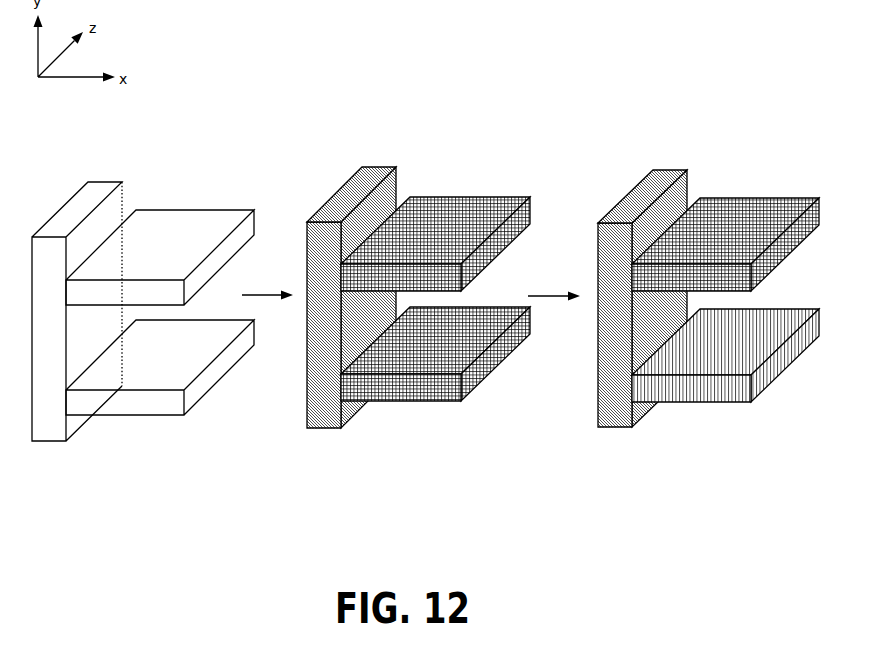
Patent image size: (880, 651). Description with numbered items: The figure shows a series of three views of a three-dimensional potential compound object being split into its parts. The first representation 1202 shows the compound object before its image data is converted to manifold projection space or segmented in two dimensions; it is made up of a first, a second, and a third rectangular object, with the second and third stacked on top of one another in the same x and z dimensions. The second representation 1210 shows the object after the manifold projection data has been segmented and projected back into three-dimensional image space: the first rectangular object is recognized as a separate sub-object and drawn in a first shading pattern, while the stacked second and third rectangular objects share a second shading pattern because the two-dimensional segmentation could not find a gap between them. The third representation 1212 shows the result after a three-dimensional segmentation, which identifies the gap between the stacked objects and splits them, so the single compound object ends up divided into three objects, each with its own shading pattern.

The first representation 1202 is at (151, 294).
The second representation 1210 is at (426, 281).
The third representation 1212 is at (716, 287).